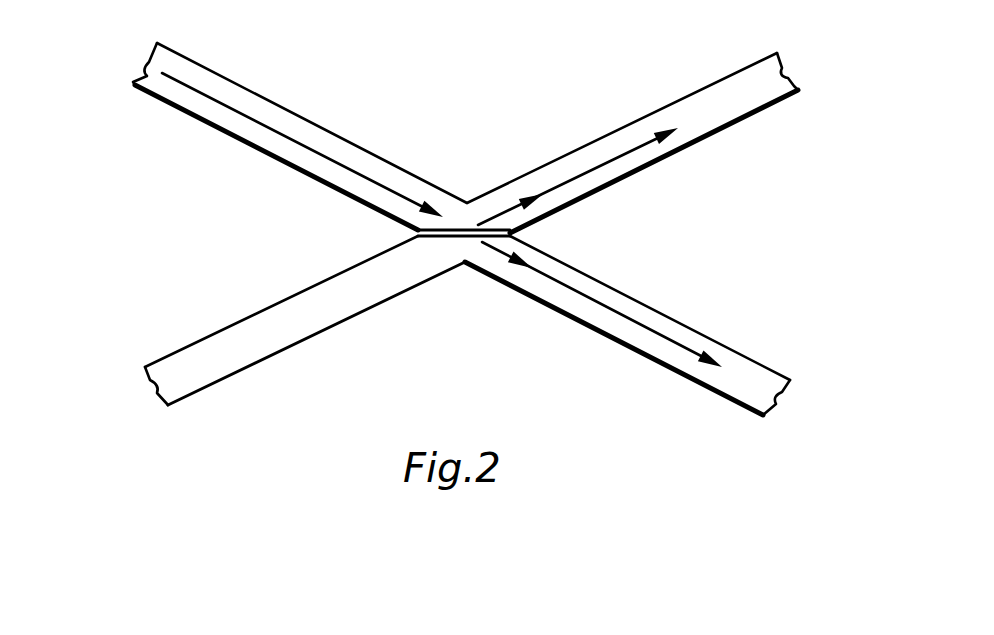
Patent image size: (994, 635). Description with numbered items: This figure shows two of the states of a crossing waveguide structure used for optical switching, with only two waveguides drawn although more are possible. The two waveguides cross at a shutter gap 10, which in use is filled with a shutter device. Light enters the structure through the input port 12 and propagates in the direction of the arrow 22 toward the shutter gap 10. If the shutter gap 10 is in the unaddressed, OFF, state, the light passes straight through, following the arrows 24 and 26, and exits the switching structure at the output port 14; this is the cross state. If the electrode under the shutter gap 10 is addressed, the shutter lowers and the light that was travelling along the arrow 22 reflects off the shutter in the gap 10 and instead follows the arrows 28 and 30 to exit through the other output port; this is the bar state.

The shutter gap 10 is at (512, 233).
The input port 12 is at (133, 63).
The output port 14 is at (785, 397).
The arrow 22 is at (320, 150).
The arrow 24 is at (500, 254).
The arrow 26 is at (635, 318).
The arrow 28 is at (485, 227).
The arrow 30 is at (625, 153).